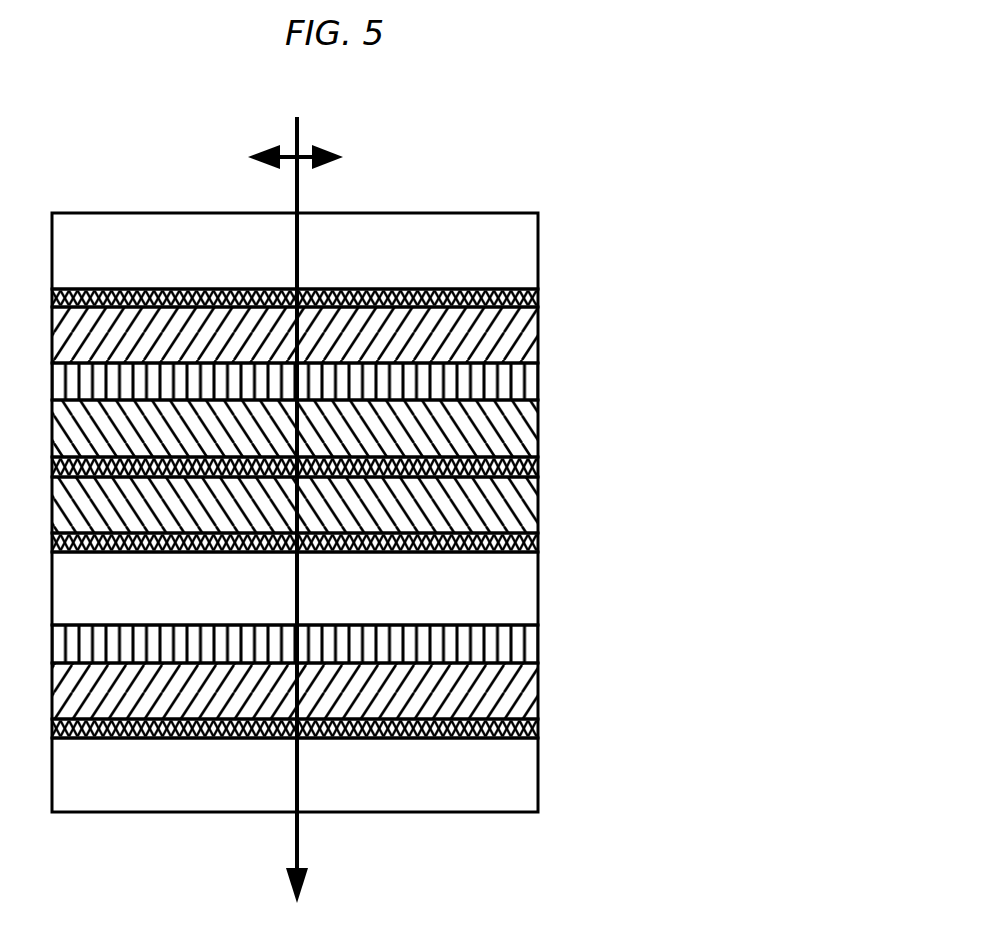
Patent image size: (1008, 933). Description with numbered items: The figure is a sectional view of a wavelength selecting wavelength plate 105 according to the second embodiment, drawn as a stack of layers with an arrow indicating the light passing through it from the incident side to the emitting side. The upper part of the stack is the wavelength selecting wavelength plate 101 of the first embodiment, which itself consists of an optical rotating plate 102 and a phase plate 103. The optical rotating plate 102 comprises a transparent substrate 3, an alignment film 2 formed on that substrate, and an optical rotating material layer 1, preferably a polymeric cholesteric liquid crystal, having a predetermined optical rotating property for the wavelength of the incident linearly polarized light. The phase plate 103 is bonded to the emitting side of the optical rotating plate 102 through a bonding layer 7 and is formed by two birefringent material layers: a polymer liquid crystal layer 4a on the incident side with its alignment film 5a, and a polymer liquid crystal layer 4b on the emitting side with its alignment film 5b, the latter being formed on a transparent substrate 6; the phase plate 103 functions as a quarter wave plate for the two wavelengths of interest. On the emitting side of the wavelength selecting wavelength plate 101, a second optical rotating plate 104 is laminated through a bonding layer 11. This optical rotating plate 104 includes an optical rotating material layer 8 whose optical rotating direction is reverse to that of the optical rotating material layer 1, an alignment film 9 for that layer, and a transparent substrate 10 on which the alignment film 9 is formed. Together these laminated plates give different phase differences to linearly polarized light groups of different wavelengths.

The optical rotating material layer 1 is at (525, 337).
The alignment film 2 is at (525, 297).
The transparent substrate 3 is at (525, 242).
The polymer liquid crystal layer 4a is at (525, 427).
The polymer liquid crystal layer 4b is at (525, 506).
The alignment film 5a is at (525, 466).
The alignment film 5b is at (525, 545).
The transparent substrate 6 is at (525, 585).
The bonding layer 7 is at (525, 385).
The optical rotating material layer 8 is at (525, 702).
The alignment film 9 is at (525, 733).
The transparent substrate 10 is at (527, 773).
The bonding layer 11 is at (525, 645).
The wavelength selecting wavelength plate 101 is at (715, 242).
The optical rotating plate 102 is at (610, 193).
The phase plate 103 is at (622, 402).
The optical rotating plate 104 is at (625, 682).
The wavelength selecting wavelength plate 105 is at (808, 353).